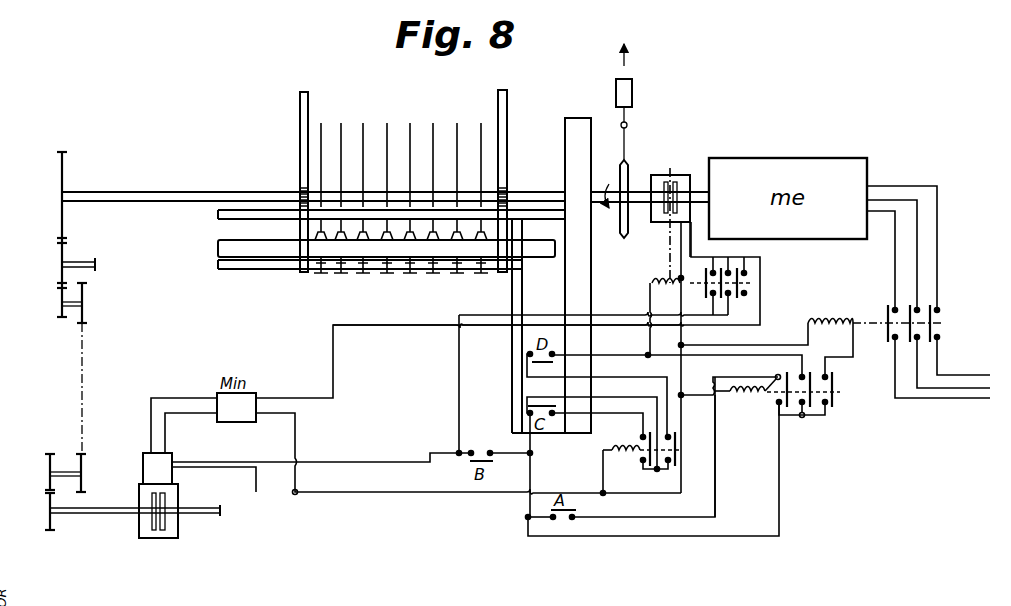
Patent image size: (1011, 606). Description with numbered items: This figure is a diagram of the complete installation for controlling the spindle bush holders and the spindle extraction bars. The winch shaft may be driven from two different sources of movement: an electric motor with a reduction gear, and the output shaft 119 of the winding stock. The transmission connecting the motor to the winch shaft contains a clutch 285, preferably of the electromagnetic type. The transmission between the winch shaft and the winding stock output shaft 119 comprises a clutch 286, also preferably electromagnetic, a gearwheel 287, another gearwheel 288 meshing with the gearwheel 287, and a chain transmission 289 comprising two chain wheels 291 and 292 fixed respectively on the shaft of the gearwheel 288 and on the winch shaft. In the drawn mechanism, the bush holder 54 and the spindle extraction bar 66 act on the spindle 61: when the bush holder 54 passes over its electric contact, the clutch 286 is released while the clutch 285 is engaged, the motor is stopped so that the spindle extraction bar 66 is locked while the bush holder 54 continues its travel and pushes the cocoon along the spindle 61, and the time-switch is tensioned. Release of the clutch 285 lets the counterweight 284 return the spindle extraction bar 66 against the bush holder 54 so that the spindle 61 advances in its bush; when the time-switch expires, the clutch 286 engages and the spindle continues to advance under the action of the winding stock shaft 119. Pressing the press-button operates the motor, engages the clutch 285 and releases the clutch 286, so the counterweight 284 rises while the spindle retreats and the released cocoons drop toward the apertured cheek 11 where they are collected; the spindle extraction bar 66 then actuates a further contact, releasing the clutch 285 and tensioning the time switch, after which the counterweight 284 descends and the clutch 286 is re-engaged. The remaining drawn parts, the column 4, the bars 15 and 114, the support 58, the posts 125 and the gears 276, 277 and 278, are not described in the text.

The column / frame member 4 is at (575, 116).
The cheek 11 is at (572, 139).
The bar 15 is at (218, 213).
The bush holder 54 is at (218, 248).
The support member 58 is at (516, 347).
The spindle 61 is at (385, 134).
The spindle extraction bar 66 is at (218, 266).
The bar 114 is at (227, 192).
The output shaft of the winding stock 119 is at (212, 516).
The posts 125 is at (300, 161).
The gear 276 is at (62, 176).
The gear 277 is at (62, 266).
The gear 278 is at (62, 304).
The counterweight 284 is at (633, 99).
The clutch 285 is at (672, 174).
The clutch 286 is at (167, 538).
The gearwheel 287 is at (50, 503).
The gearwheel 288 is at (50, 464).
The chain transmission 289 is at (84, 366).
The chain wheel 291 is at (82, 478).
The chain wheel 292 is at (83, 290).